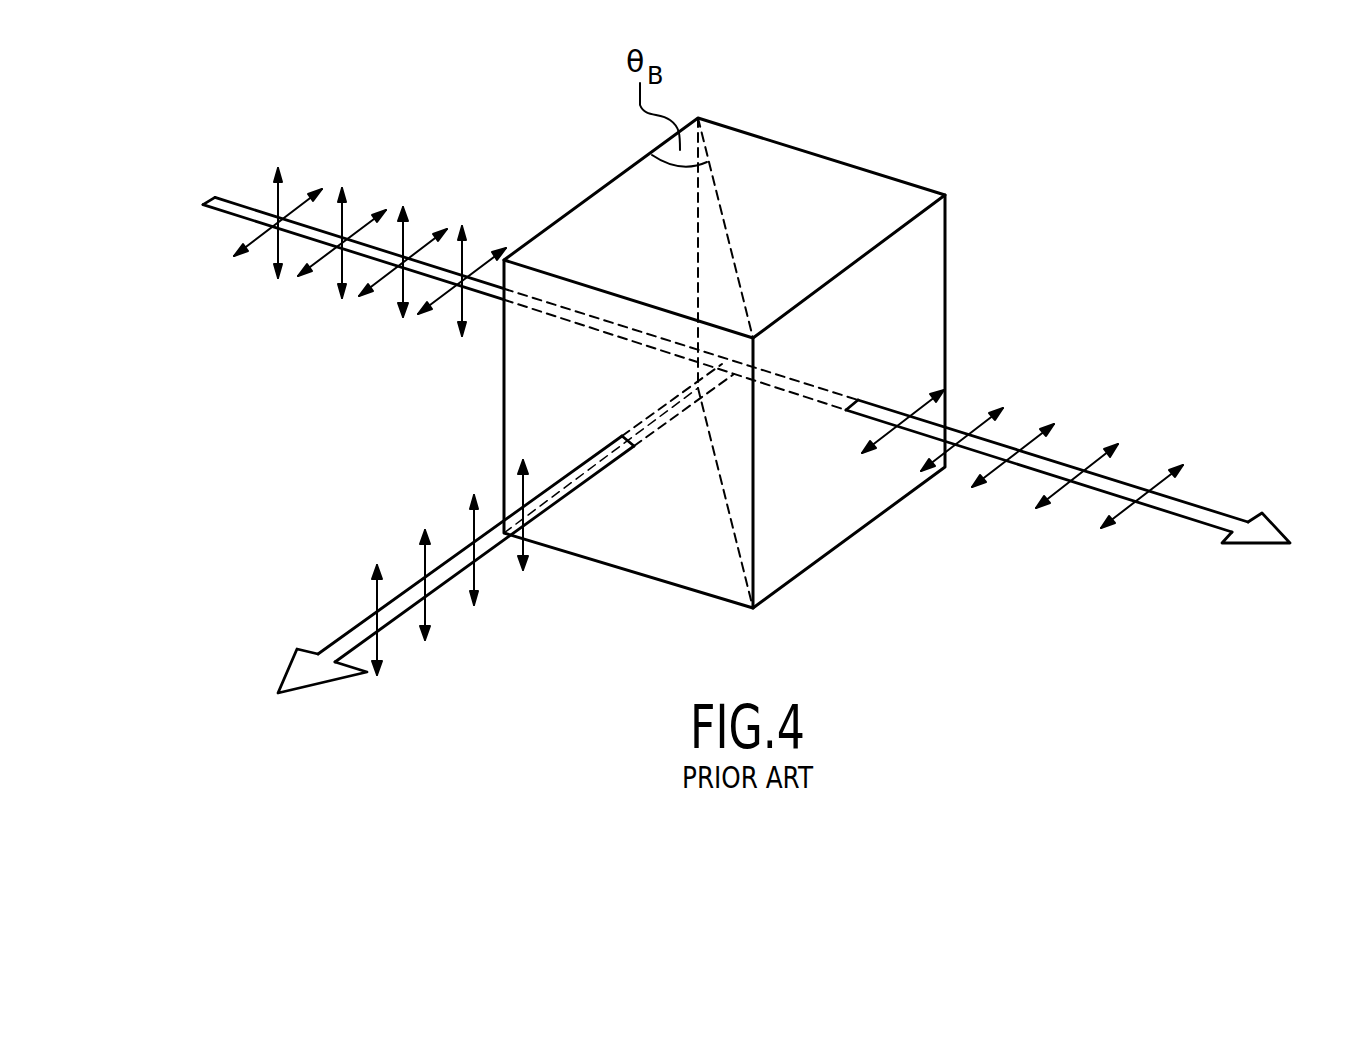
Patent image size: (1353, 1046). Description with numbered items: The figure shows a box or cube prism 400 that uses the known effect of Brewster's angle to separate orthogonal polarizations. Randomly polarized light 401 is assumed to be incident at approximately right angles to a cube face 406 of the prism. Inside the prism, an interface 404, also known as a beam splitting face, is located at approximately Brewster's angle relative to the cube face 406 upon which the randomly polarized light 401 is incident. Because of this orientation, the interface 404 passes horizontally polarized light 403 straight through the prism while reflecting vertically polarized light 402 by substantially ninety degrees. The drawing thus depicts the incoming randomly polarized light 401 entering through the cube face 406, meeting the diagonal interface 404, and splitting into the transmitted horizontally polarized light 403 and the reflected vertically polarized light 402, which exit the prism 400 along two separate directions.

The box prism 400 is at (945, 250).
The randomly polarized light 401 is at (223, 218).
The vertically polarized light 402 is at (318, 683).
The horizontally polarized light 403 is at (1215, 512).
The interface 404 is at (725, 222).
The cube face 406 is at (618, 260).